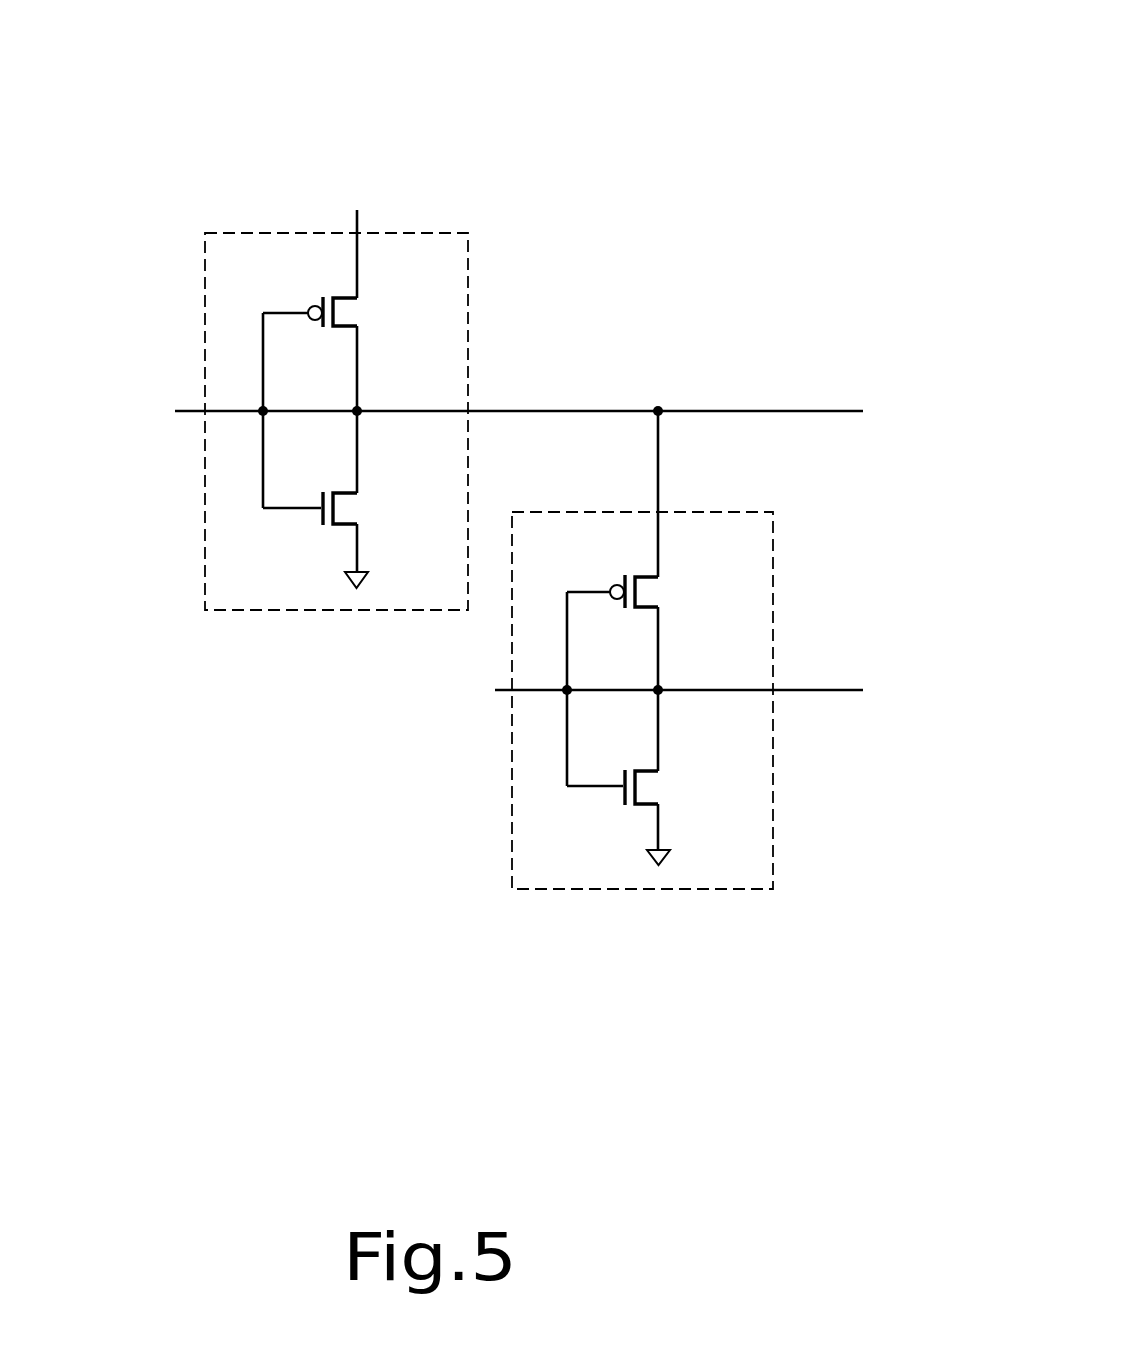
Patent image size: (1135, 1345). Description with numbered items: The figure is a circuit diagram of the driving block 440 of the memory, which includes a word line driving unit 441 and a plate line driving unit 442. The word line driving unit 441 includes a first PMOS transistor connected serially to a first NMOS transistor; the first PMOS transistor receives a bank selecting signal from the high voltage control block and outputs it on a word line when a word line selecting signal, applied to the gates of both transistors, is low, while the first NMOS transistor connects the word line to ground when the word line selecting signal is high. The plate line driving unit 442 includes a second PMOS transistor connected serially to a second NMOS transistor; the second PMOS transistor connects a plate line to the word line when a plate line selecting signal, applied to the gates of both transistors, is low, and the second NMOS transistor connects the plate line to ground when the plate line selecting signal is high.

The driving block 440 is at (740, 84).
The word line driving unit 441 is at (469, 284).
The plate line driving unit 442 is at (774, 574).